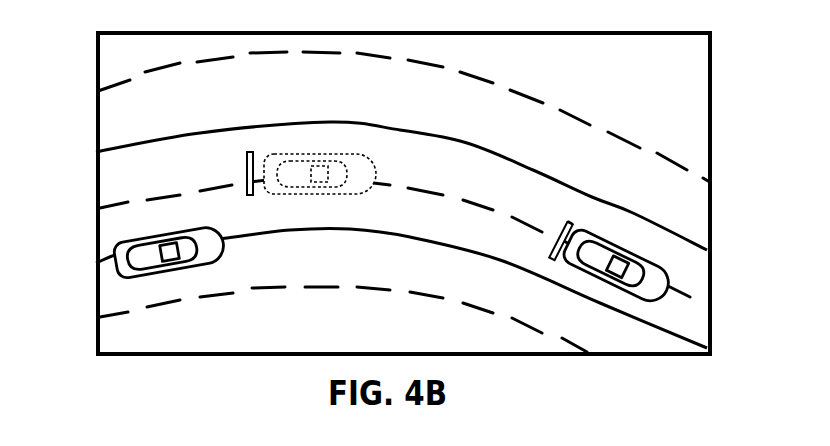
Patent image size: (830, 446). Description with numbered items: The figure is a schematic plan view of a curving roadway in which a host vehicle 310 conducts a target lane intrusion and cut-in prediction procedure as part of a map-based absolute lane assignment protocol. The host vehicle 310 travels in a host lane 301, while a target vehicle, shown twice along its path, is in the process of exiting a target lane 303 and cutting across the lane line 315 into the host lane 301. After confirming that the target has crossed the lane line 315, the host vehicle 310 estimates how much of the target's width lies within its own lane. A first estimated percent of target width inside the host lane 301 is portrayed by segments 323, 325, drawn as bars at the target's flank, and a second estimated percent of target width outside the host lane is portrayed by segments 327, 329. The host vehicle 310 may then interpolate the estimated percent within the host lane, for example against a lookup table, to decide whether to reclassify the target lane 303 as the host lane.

The host lane 301 is at (118, 195).
The target lane 303 is at (722, 206).
The host vehicle 310 is at (126, 239).
The lane line 315 is at (683, 292).
The segment 323 is at (244, 183).
The segment 325 is at (556, 241).
The segment 327 is at (254, 153).
The segment 329 is at (567, 232).